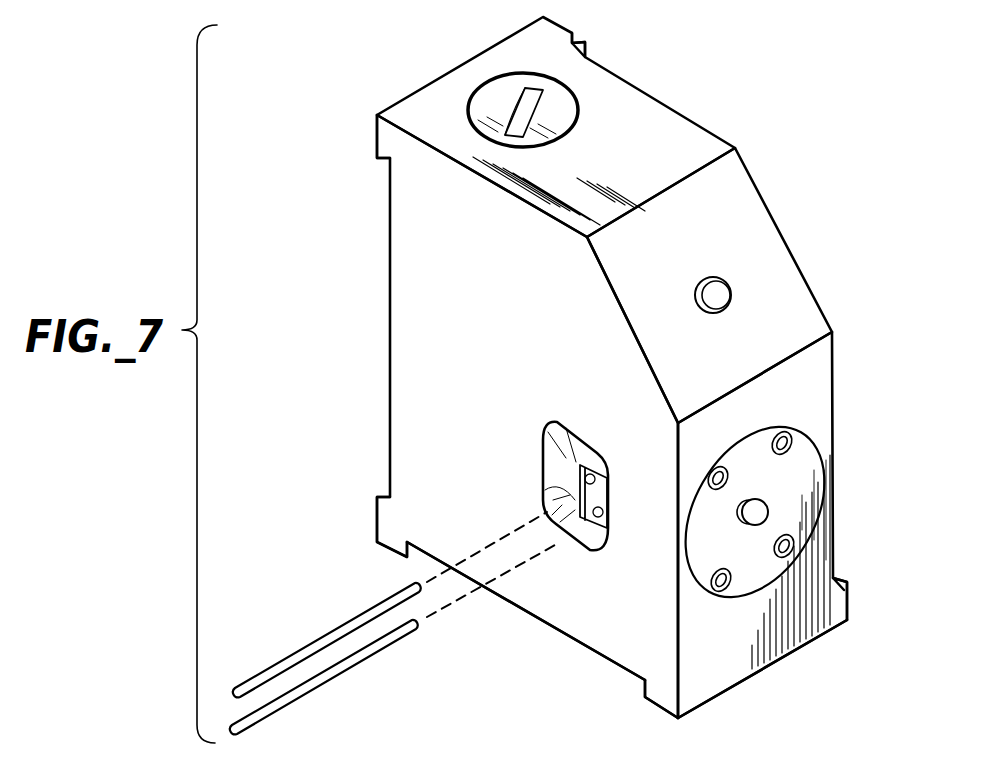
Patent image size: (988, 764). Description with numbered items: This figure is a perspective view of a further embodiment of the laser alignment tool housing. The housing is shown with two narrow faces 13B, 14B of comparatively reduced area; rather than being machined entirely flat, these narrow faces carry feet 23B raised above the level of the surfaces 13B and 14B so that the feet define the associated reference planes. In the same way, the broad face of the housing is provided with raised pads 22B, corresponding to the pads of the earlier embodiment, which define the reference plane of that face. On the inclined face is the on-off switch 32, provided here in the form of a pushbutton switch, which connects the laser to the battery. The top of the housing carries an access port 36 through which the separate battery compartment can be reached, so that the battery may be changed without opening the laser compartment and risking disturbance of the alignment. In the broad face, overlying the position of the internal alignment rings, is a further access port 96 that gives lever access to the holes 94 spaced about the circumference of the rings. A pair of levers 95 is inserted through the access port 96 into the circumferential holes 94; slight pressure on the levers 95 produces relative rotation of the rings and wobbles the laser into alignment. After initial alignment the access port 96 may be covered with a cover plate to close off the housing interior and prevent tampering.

The narrow face 13B is at (388, 290).
The narrow face 14B is at (587, 651).
The pads 22B is at (575, 33).
The feet 23B is at (377, 142).
The on-off switch 32 is at (713, 282).
The access port 36 is at (487, 108).
The holes 94 is at (604, 515).
The levers 95 is at (343, 635).
The access port 96 is at (568, 500).